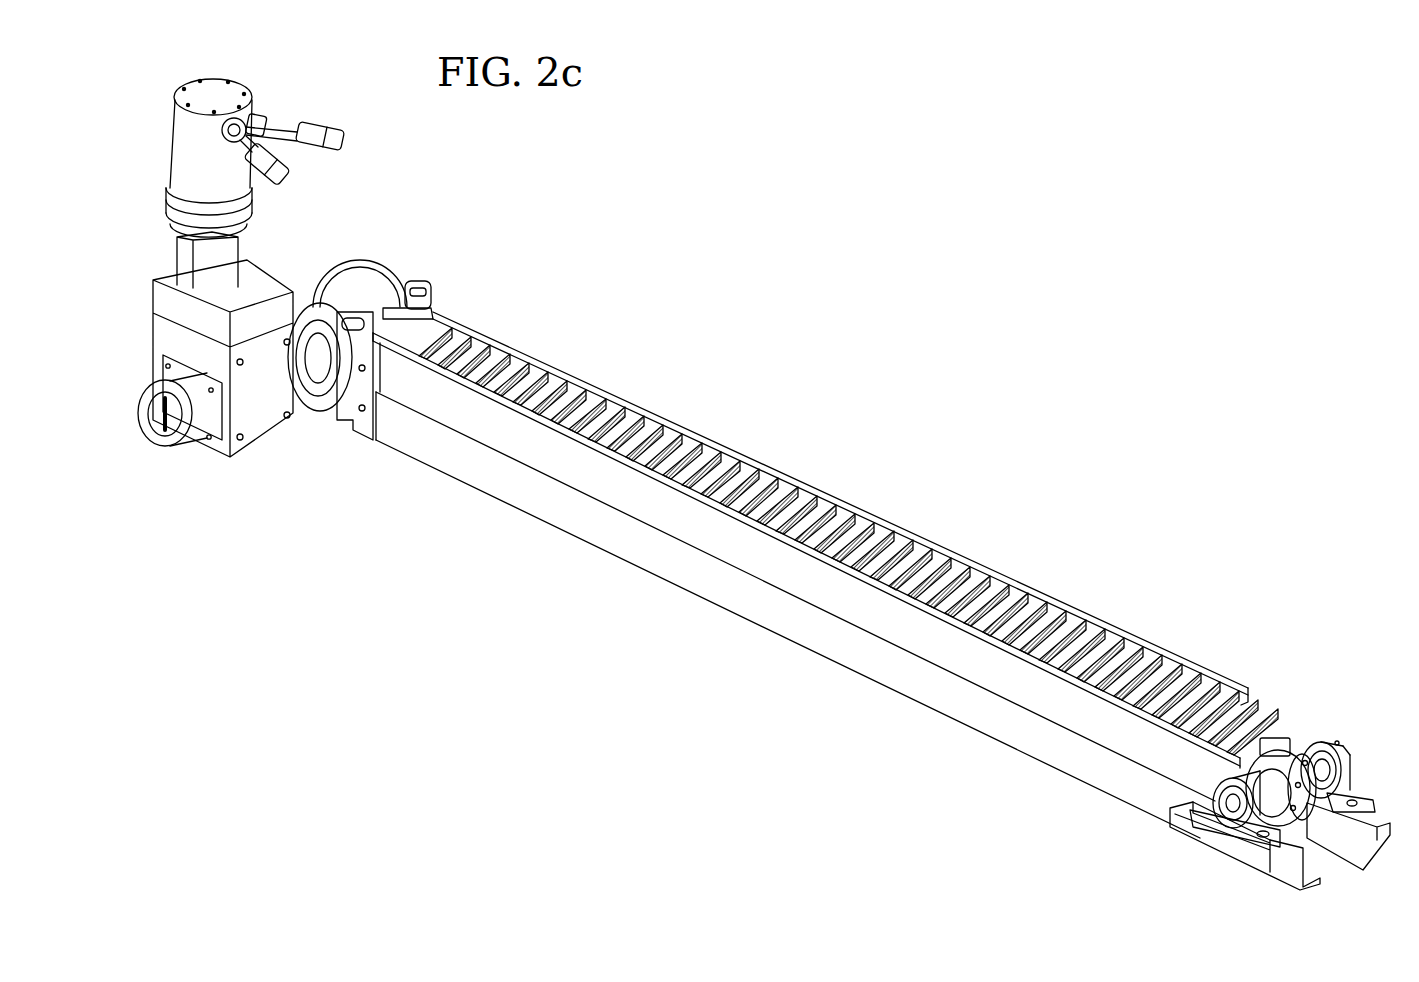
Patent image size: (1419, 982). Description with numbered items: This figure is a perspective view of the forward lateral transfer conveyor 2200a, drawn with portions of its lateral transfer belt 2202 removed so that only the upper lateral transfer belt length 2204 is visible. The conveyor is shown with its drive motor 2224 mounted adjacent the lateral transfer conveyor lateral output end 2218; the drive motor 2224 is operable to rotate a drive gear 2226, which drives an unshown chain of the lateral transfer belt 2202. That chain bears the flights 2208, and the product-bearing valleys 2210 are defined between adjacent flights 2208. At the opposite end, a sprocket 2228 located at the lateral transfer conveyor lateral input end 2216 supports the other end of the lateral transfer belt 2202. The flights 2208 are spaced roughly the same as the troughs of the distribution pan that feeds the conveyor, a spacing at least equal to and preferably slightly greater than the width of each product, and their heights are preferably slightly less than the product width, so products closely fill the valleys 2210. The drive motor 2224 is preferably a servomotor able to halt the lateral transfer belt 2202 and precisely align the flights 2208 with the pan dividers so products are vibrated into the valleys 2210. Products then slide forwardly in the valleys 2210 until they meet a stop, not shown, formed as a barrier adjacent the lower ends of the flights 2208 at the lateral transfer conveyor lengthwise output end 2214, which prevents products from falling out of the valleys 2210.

The lateral transfer conveyor 2200a is at (677, 570).
The lateral transfer belt 2202 is at (840, 536).
The upper lateral transfer belt length 2204 is at (915, 578).
The flights 2208 is at (953, 575).
The product-bearing valleys 2210 is at (968, 580).
The lateral transfer conveyor lengthwise output end 2214 is at (1057, 612).
The lateral transfer conveyor lateral input end 2216 is at (1107, 703).
The lateral transfer conveyor lateral output end 2218 is at (508, 340).
The drive motor 2224 is at (250, 212).
The drive gear 2226 is at (320, 303).
The sprocket 2228 is at (1294, 765).